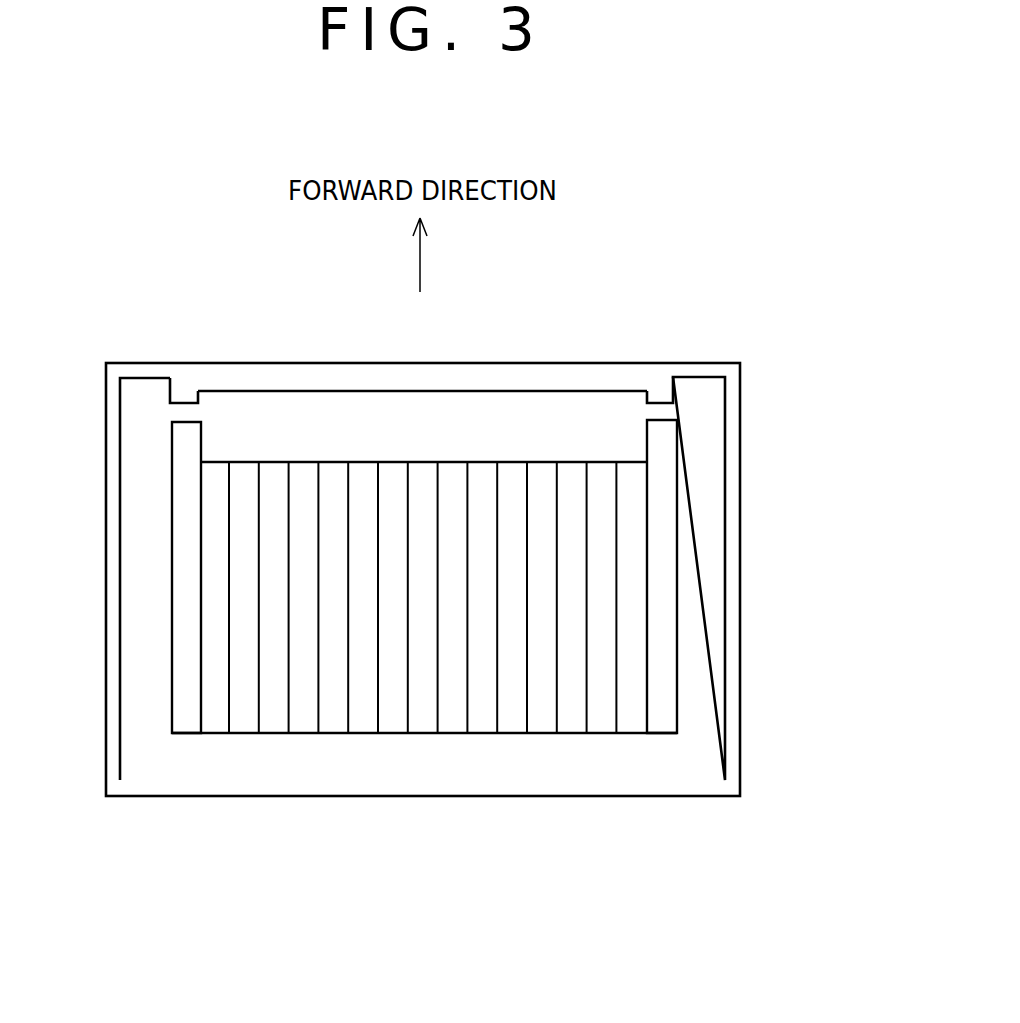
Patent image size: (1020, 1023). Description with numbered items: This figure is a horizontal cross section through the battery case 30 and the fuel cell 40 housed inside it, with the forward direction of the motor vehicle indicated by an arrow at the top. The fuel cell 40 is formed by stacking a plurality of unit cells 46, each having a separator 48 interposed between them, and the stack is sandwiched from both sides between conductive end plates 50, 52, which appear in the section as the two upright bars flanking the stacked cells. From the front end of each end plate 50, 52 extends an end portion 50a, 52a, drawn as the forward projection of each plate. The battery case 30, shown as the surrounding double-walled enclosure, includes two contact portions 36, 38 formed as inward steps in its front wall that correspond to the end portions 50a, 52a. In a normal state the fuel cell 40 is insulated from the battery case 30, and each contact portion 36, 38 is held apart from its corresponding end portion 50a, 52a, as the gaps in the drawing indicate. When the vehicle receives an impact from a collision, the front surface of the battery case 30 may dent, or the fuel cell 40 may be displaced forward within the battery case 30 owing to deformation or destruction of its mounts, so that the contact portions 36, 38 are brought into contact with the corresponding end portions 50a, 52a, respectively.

The battery case 30 is at (740, 545).
The contact portion 36 is at (199, 395).
The contact portion 38 is at (645, 395).
The fuel cell 40 is at (402, 770).
The unit cell 46 is at (484, 718).
The separator 48 is at (469, 733).
The end plate 50 is at (188, 720).
The end portion 50a is at (186, 452).
The end plate 52 is at (662, 718).
The end portion 52a is at (660, 449).